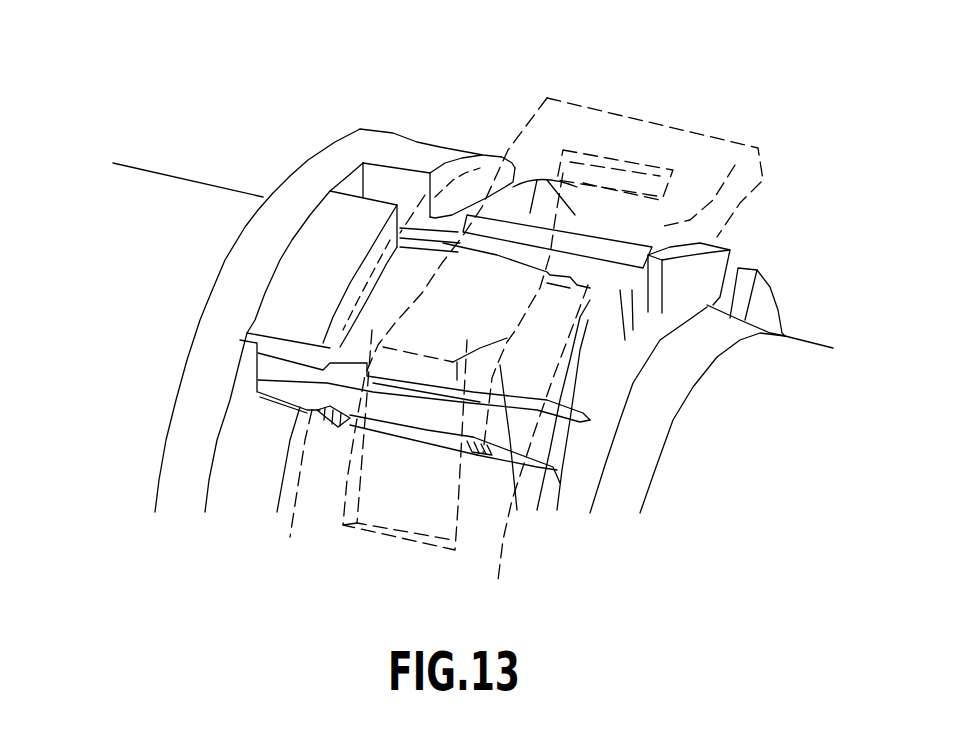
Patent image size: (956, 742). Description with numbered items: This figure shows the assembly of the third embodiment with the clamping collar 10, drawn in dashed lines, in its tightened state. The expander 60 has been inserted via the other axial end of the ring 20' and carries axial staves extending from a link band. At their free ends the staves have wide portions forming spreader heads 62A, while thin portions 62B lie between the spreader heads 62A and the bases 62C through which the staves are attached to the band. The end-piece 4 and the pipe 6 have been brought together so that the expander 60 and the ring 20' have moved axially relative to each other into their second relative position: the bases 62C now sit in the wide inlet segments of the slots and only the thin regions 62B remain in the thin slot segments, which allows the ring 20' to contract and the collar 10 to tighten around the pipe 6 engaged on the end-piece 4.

The end-piece 4 is at (185, 197).
The pipe 6 is at (793, 350).
The clamping collar 10 is at (553, 295).
The ring 20' is at (437, 131).
The expander 60 is at (146, 437).
The spreader heads 62A is at (513, 430).
The thin portions 62B is at (433, 415).
The bases 62C is at (282, 374).